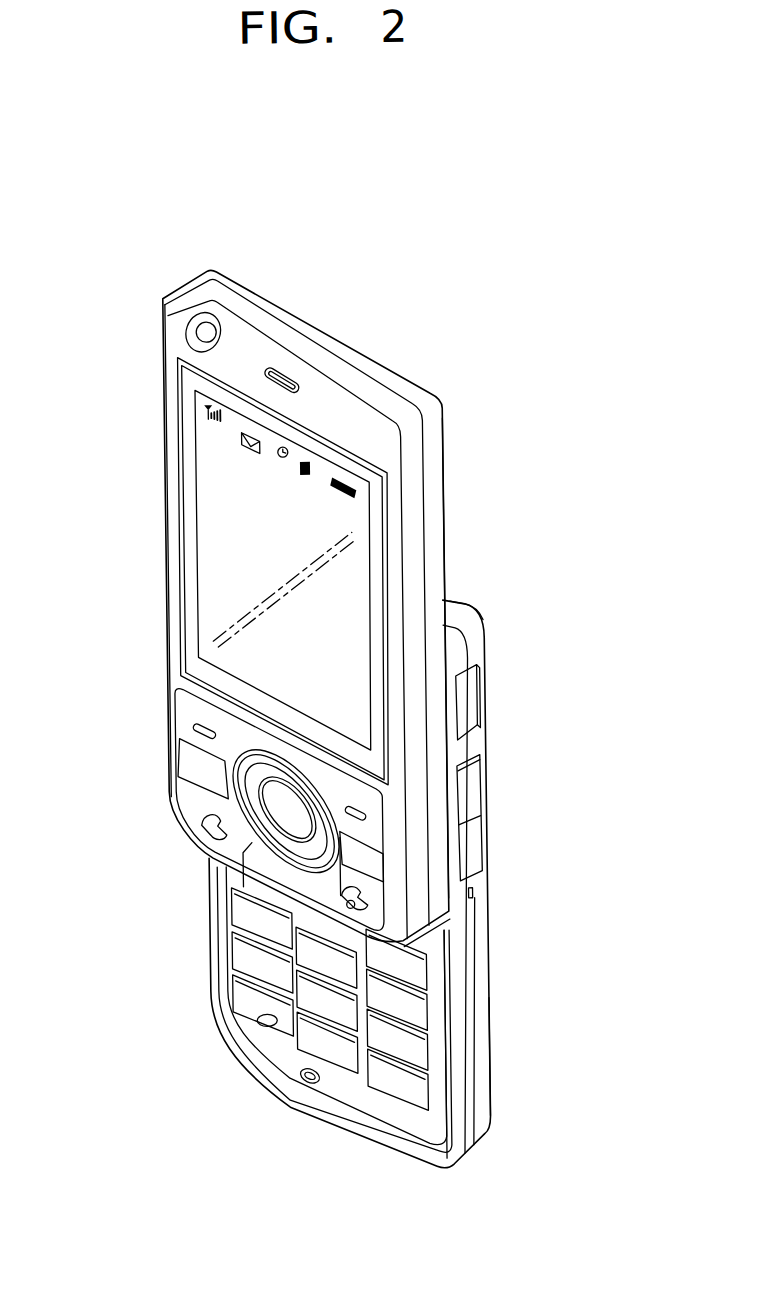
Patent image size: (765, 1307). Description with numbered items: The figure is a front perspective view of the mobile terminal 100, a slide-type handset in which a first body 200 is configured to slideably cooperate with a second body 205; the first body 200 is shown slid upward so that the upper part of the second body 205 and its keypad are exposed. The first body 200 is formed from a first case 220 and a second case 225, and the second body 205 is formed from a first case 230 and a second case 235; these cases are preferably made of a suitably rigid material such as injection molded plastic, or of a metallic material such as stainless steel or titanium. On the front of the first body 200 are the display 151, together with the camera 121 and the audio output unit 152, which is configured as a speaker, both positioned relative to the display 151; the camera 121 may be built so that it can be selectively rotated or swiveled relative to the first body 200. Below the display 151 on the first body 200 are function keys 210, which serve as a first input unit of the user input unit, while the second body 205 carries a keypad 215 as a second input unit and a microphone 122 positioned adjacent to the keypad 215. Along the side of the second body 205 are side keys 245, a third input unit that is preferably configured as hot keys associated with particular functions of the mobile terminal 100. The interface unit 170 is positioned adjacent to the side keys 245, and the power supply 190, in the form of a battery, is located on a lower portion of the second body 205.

The mobile terminal 100 is at (467, 312).
The first body 200 is at (131, 420).
The second body 205 is at (196, 932).
The function keys 210 is at (193, 760).
The keypad 215 is at (230, 987).
The first case 220 is at (412, 483).
The second case 225 is at (436, 455).
The first case 230 is at (457, 653).
The second case 235 is at (471, 617).
The side keys 245 is at (469, 851).
The interface unit 170 is at (469, 700).
The power supply 190 is at (482, 1028).
The display 151 is at (216, 517).
The audio output unit 152 is at (285, 374).
The camera 121 is at (210, 334).
The microphone 122 is at (301, 1087).